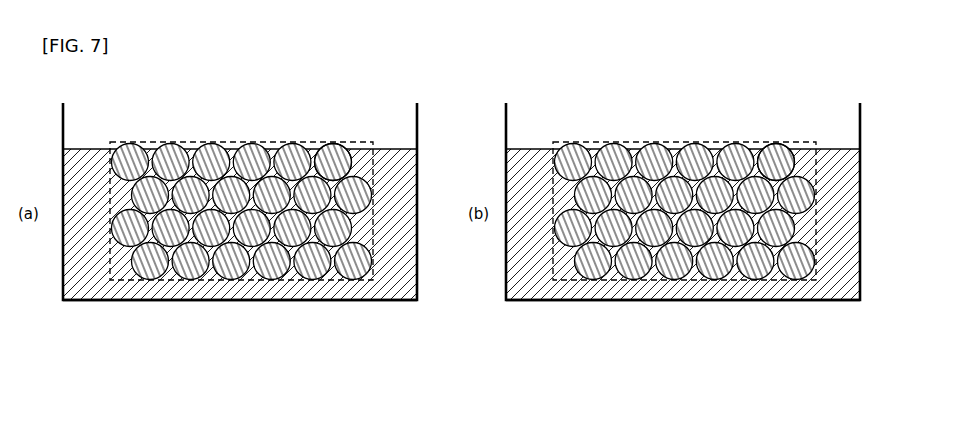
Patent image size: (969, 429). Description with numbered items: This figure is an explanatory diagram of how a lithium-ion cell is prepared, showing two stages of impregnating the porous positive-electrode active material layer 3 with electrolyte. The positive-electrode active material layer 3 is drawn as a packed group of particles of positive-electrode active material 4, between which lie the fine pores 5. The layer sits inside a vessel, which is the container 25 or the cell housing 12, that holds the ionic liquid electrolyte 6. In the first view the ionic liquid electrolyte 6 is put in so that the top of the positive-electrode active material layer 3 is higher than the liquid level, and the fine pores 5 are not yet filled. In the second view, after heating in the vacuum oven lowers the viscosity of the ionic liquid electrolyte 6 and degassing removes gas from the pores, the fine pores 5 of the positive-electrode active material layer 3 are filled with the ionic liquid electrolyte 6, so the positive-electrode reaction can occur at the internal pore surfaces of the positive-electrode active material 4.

The positive-electrode active material layer 3 is at (179, 140).
The positive-electrode active material 4 is at (255, 156).
The fine pores 5 is at (352, 178).
The ionic liquid electrolyte 6 is at (83, 181).
The container 25 is at (173, 301).
The cell housing 12 is at (461, 327).